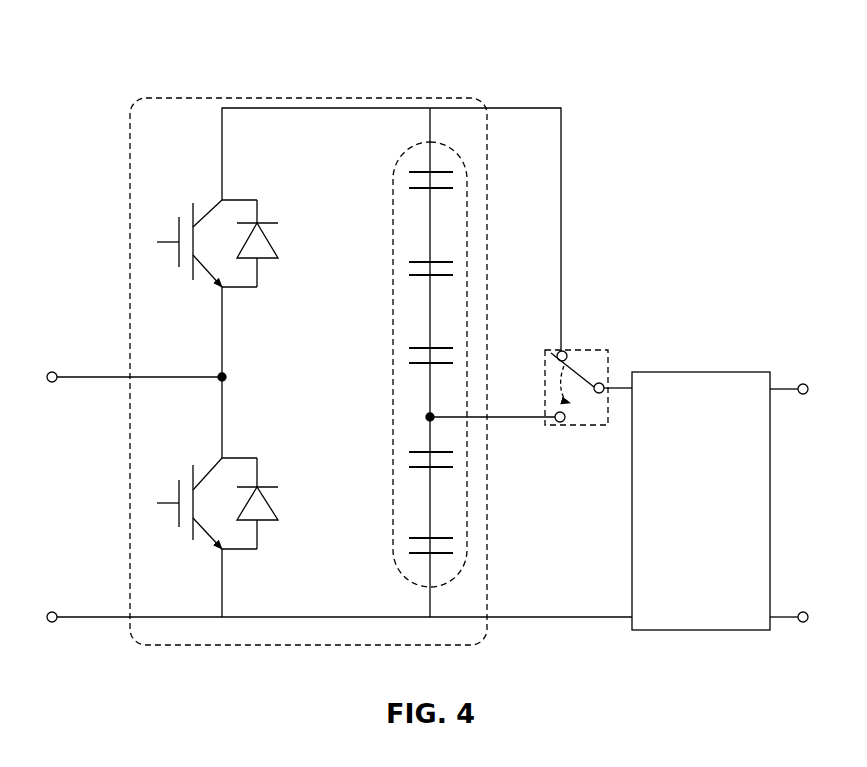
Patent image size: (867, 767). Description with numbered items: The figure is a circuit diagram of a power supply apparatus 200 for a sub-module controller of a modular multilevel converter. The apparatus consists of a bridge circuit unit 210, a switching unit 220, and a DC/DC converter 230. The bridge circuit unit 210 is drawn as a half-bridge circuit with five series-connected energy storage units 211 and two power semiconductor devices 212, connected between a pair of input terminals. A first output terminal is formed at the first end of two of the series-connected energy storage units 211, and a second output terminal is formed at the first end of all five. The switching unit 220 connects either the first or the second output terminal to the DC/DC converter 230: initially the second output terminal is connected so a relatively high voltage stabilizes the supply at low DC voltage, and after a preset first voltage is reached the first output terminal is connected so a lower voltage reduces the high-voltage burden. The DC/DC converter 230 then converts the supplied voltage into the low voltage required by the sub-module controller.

The power supply apparatus 200 is at (586, 84).
The bridge circuit unit 210 is at (376, 97).
The energy storage units 211 is at (467, 218).
The power semiconductor devices 212 is at (294, 292).
The switching unit 220 is at (586, 349).
The DC/DC converter 230 is at (701, 371).